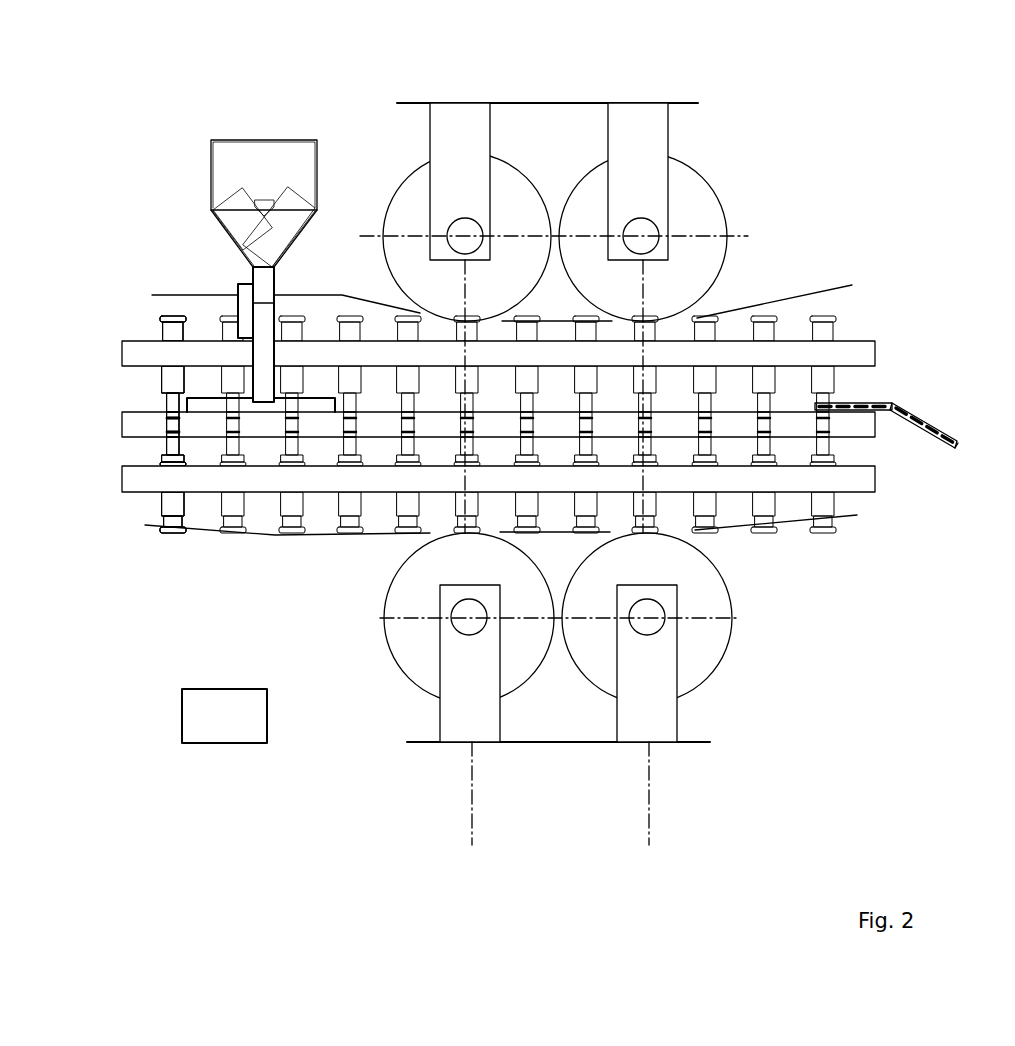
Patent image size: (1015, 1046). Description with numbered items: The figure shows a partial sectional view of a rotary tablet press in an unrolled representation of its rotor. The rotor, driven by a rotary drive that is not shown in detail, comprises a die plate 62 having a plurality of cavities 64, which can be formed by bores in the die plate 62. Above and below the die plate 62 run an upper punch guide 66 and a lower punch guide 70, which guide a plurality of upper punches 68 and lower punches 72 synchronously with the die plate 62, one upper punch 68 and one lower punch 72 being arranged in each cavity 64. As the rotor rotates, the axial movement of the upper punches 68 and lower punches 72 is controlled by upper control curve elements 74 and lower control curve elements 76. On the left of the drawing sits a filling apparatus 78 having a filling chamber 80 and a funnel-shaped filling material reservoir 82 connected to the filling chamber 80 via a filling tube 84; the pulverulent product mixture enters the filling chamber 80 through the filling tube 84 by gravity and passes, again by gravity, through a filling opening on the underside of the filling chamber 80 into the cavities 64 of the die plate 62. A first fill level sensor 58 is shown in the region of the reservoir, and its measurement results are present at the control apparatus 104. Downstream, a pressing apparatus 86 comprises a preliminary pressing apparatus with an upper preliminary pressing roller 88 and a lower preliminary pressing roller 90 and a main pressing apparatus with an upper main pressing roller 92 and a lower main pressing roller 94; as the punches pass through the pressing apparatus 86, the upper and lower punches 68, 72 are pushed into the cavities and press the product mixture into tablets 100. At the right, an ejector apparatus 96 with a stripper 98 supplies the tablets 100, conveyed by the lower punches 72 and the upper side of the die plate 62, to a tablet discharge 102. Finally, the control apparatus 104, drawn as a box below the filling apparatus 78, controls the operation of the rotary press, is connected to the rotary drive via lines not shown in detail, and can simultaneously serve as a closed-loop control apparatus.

The first fill level sensor 58 is at (247, 290).
The die plate 62 is at (132, 425).
The cavities 64 is at (173, 417).
The upper punch guide 66 is at (133, 352).
The upper punches 68 is at (168, 328).
The lower punch guide 70 is at (140, 478).
The lower punches 72 is at (170, 502).
The upper control curve elements 74 is at (198, 293).
The lower control curve elements 76 is at (193, 530).
The filling apparatus 78 is at (242, 340).
The filling chamber 80 is at (192, 408).
The funnel-shaped filling material reservoir 82 is at (252, 158).
The filling tube 84 is at (263, 282).
The pressing apparatus 86 is at (565, 453).
The upper preliminary pressing roller 88 is at (413, 188).
The lower preliminary pressing roller 90 is at (412, 650).
The upper main pressing roller 92 is at (712, 222).
The lower main pressing roller 94 is at (713, 637).
The ejector apparatus 96 is at (913, 418).
The stripper 98 is at (887, 408).
The tablets 100 is at (937, 427).
The tablet discharge 102 is at (960, 450).
The control apparatus 104 is at (232, 725).